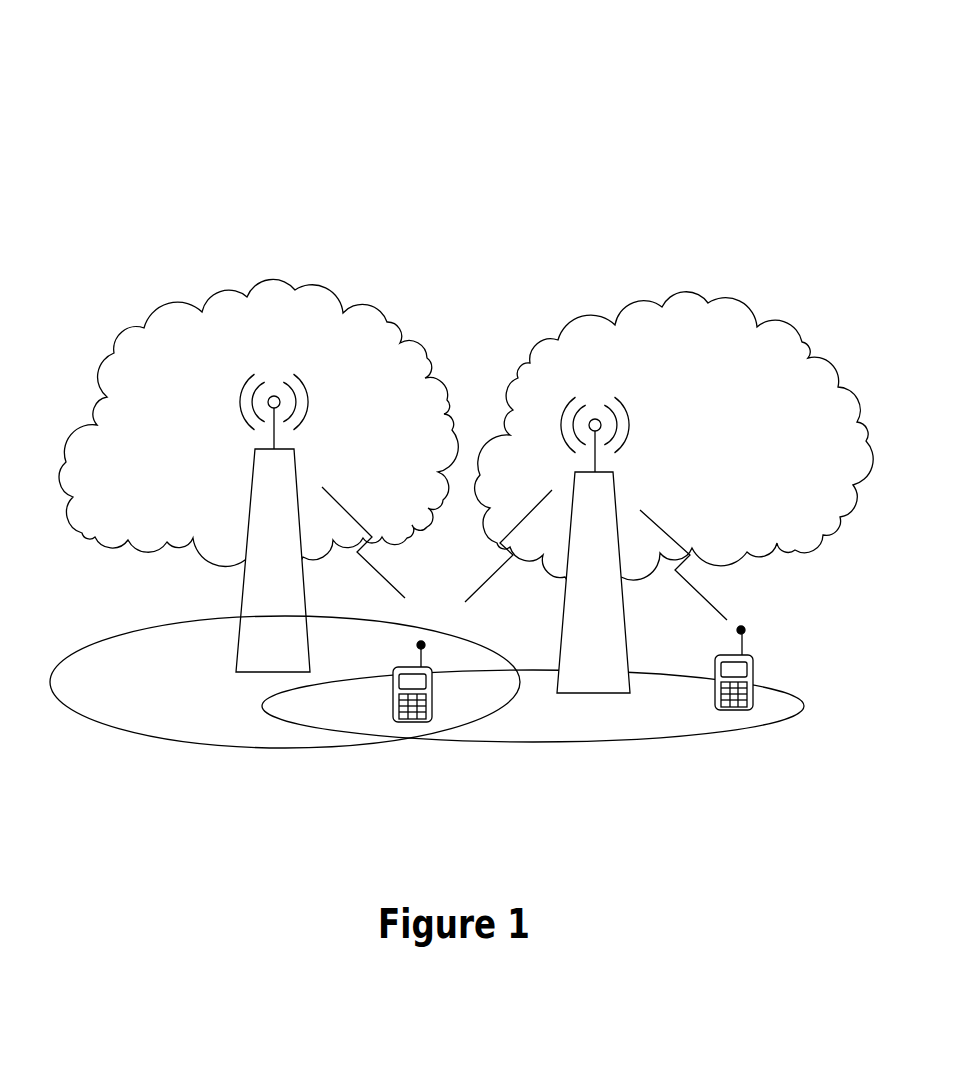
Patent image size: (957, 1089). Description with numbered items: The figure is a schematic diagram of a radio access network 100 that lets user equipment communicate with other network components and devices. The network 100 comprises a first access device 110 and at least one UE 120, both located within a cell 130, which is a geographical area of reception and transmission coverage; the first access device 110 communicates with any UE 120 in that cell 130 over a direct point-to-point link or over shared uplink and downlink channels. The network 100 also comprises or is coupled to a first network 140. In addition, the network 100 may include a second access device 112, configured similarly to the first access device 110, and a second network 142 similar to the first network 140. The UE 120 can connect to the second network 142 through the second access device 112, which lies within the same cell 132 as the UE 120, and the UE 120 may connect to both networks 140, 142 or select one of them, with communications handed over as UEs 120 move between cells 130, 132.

The radio access network 100 is at (507, 58).
The first access device 110 is at (615, 483).
The second access device 112 is at (295, 463).
The UE 120 is at (395, 667).
The cell 130 is at (492, 743).
The cell 132 is at (193, 742).
The first network 140 is at (748, 297).
The second network 142 is at (333, 285).